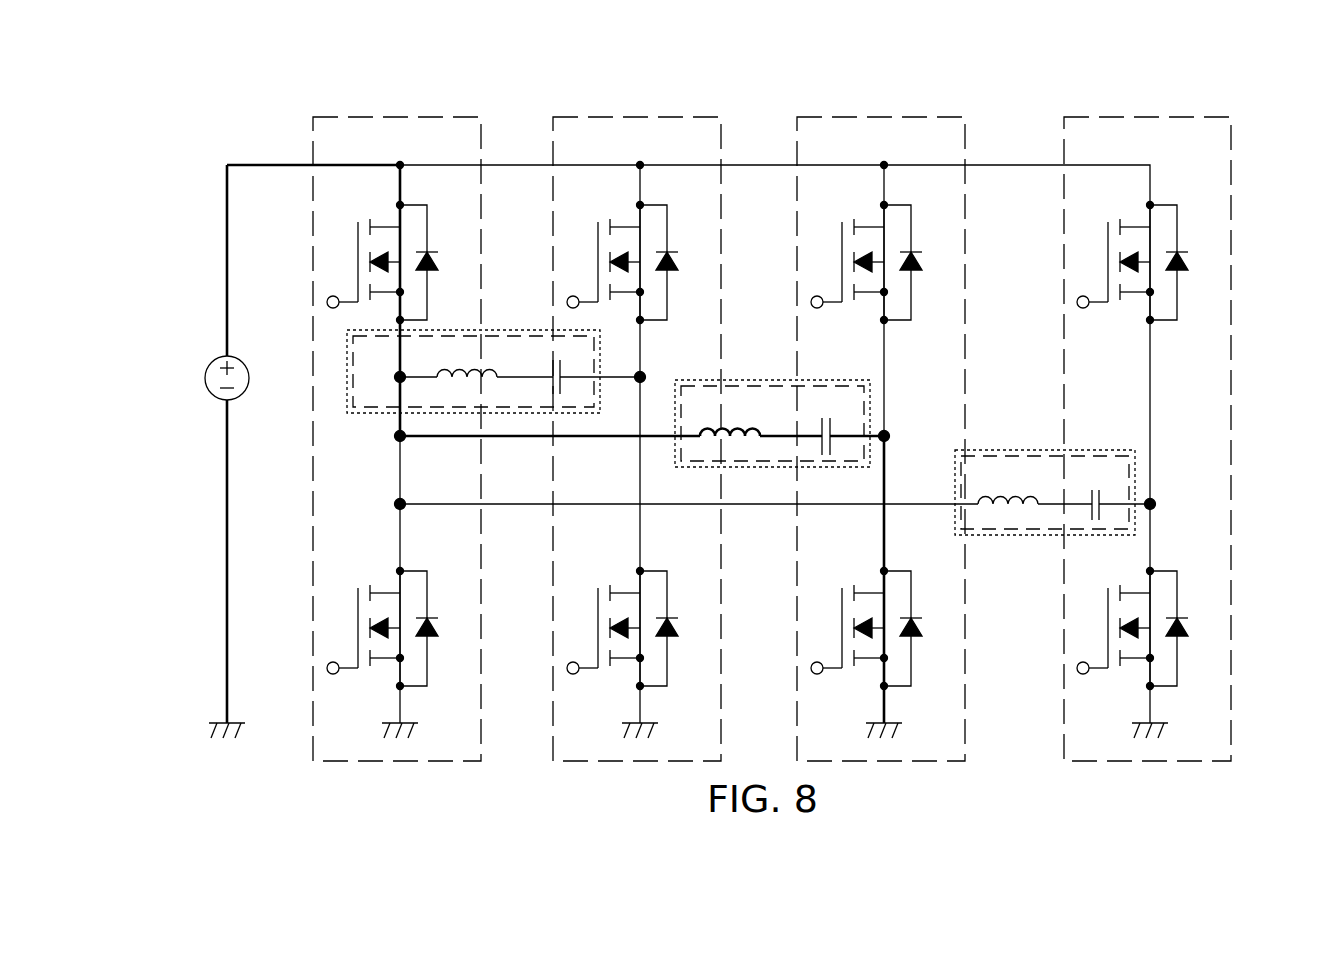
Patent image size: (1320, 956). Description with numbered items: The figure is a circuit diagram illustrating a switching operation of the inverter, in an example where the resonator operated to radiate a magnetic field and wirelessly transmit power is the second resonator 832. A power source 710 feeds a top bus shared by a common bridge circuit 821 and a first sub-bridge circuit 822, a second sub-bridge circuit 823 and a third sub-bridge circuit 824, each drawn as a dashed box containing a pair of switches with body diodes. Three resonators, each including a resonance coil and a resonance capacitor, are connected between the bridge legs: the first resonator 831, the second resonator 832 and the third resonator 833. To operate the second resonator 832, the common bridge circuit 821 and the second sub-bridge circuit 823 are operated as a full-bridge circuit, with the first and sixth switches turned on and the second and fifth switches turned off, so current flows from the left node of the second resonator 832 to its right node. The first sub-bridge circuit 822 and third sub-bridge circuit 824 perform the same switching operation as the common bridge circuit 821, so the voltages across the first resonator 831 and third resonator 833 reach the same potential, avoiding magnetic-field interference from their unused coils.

The DC power source 710 is at (212, 363).
The common bridge circuit 821 is at (456, 117).
The first sub-bridge circuit 822 is at (696, 117).
The second sub-bridge circuit 823 is at (939, 117).
The third sub-bridge circuit 824 is at (1206, 117).
The first resonator 831 is at (515, 330).
The second resonator 832 is at (757, 383).
The third resonator 833 is at (1010, 450).